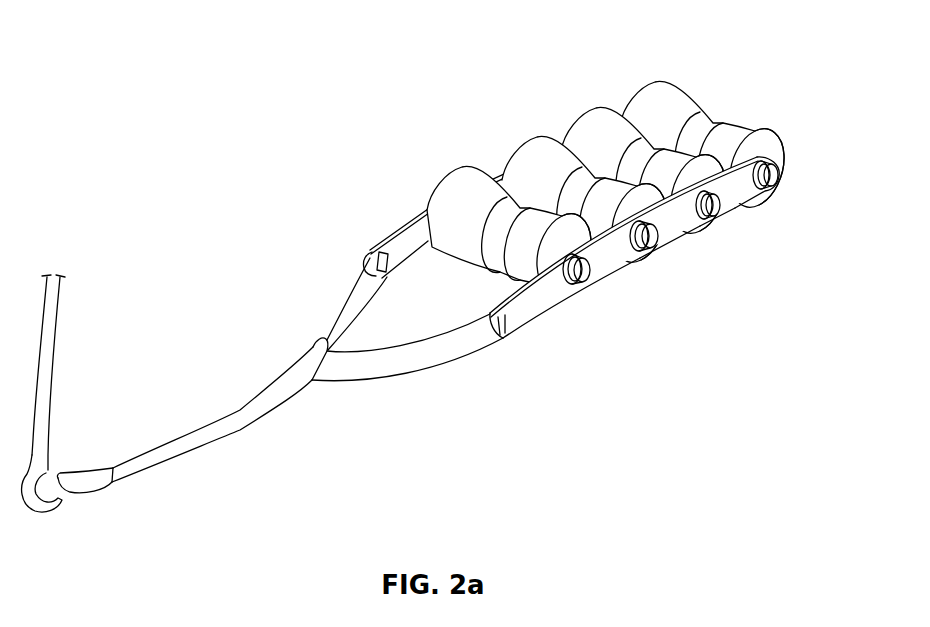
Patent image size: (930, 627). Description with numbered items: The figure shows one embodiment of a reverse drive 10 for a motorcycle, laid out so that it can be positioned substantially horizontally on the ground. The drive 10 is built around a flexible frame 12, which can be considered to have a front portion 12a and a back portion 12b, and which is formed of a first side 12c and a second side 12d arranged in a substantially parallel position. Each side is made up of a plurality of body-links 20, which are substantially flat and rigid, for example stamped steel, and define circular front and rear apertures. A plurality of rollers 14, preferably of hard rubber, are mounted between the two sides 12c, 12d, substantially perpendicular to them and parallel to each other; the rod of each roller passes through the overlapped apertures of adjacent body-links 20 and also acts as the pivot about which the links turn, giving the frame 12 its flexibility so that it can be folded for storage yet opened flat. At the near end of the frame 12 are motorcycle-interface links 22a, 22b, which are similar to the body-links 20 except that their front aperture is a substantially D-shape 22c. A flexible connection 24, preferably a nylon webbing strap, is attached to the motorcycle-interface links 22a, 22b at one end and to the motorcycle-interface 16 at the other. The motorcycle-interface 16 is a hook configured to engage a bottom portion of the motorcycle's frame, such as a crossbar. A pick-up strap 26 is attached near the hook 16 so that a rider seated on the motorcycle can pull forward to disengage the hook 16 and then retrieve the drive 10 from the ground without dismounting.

The reverse drive 10 is at (372, 92).
The flexible frame 12 is at (690, 220).
The front portion 12a is at (613, 257).
The back portion 12b is at (747, 197).
The first side 12c is at (733, 242).
The second side 12d is at (492, 177).
The rollers 14 is at (455, 185).
The motorcycle-interface 16 is at (87, 487).
The body-links 20 is at (502, 173).
The motorcycle-interface link 22a is at (520, 315).
The motorcycle-interface link 22b is at (392, 255).
The D-shape front aperture 22c is at (356, 259).
The flexible connection 24 is at (227, 425).
The pick-up strap 26 is at (52, 332).